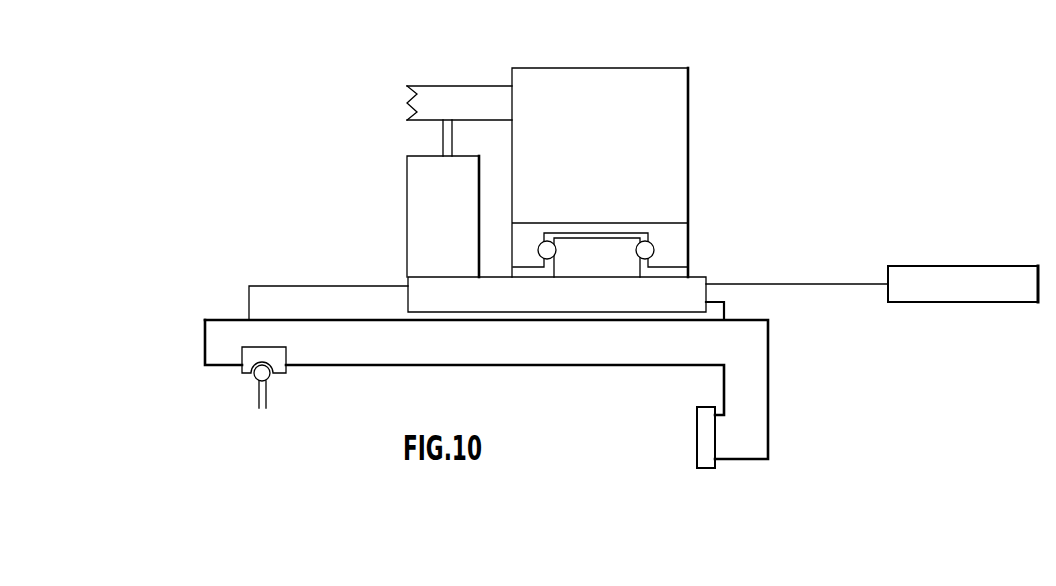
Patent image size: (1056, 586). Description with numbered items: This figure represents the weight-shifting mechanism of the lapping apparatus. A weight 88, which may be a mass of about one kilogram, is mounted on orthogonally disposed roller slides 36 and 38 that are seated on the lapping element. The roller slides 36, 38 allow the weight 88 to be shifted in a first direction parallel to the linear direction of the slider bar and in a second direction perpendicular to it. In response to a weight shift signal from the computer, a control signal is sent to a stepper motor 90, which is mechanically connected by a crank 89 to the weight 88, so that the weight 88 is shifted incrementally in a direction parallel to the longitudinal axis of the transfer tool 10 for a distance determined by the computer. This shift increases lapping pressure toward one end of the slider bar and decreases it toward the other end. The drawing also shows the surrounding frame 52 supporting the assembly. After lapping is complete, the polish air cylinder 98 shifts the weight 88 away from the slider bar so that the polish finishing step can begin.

The transfer tool 10 is at (700, 438).
The roller slide 36 is at (682, 240).
The roller slide 38 is at (418, 283).
The frame 52 is at (759, 375).
The weight 88 is at (645, 72).
The crank 89 is at (445, 90).
The stepper motor 90 is at (412, 185).
The polish air cylinder 98 is at (977, 272).